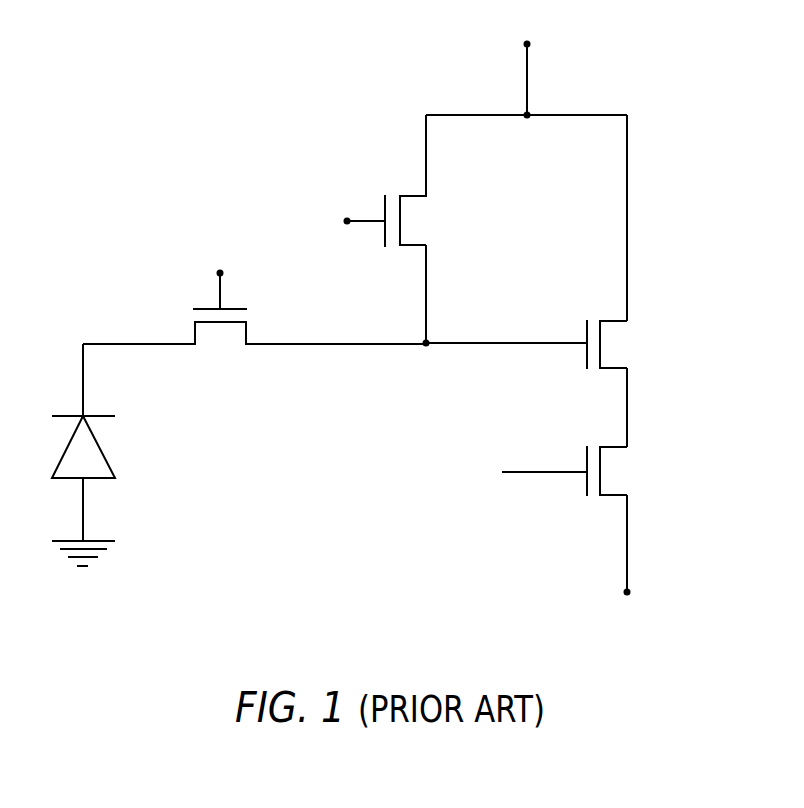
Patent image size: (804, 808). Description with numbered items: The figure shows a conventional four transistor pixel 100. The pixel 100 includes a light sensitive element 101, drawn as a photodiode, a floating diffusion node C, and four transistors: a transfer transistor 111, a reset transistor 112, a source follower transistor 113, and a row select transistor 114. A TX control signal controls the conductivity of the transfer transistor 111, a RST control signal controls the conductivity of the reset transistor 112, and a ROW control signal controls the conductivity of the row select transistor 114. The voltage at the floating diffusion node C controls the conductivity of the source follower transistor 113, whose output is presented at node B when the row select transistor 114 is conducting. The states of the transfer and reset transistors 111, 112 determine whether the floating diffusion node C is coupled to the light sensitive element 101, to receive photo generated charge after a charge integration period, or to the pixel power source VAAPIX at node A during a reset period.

The four transistor pixel 100 is at (186, 88).
The light sensitive element 101 is at (84, 458).
The transfer transistor 111 is at (193, 336).
The reset transistor 112 is at (412, 194).
The source follower transistor 113 is at (583, 328).
The row select transistor 114 is at (599, 444).